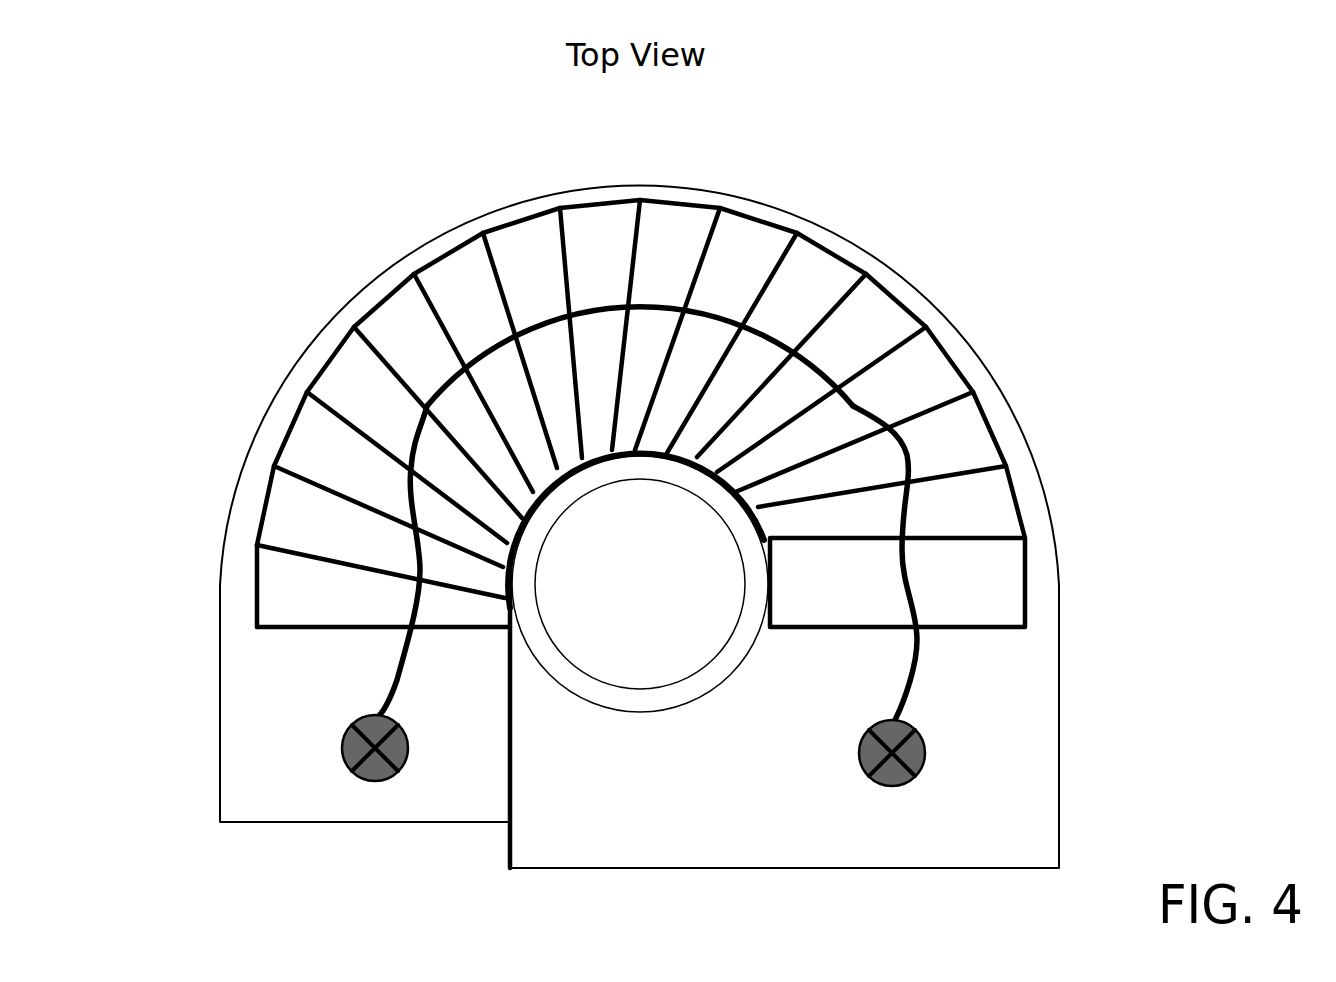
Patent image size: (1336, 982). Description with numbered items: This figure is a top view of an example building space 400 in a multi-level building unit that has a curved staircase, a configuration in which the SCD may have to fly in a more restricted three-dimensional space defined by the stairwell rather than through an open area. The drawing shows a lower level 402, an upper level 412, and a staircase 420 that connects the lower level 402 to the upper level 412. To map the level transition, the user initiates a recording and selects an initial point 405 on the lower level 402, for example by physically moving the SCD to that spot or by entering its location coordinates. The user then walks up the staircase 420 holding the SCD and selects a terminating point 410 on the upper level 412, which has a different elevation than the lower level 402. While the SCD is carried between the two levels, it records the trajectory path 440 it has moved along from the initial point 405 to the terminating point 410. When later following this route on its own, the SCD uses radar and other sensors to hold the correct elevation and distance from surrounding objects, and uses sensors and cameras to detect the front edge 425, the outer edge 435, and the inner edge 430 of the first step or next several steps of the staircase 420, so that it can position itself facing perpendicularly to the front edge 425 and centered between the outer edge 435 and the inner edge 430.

The building space 400 is at (1240, 46).
The lower level 402 is at (240, 785).
The initial point 405 is at (375, 782).
The terminating point 410 is at (925, 752).
The upper level 412 is at (967, 818).
The staircase 420 is at (417, 353).
The front edge 425 is at (383, 630).
The inner edge 430 is at (509, 610).
The outer edge 435 is at (258, 583).
The trajectory path 440 is at (410, 558).